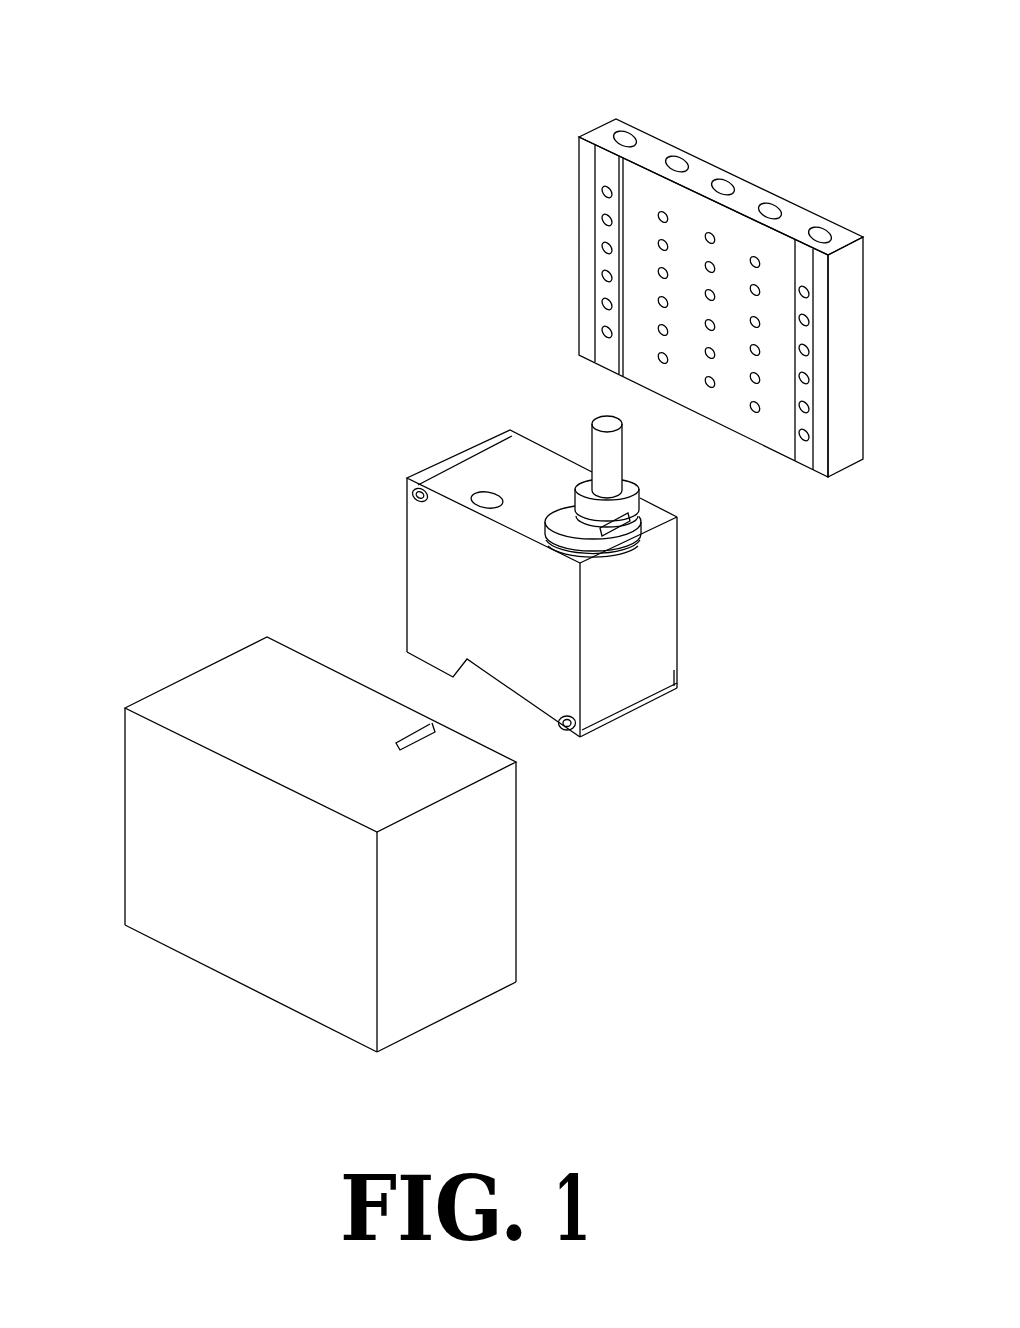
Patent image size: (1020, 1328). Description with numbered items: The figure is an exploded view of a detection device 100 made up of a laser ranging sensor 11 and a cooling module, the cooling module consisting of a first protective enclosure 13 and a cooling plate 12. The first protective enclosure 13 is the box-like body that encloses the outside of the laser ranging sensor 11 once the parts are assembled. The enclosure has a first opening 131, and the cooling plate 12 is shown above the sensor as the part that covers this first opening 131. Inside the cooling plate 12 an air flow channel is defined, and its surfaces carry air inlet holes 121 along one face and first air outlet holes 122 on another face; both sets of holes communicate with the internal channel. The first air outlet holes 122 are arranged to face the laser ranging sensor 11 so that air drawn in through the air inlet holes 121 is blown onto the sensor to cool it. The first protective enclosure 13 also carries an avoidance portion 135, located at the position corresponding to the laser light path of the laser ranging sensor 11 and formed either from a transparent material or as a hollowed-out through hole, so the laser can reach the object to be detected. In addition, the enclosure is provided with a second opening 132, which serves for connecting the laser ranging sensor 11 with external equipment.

The detection device 100 is at (137, 65).
The laser ranging sensor 11 is at (493, 455).
The cooling plate 12 is at (592, 193).
The air inlet holes 121 is at (699, 149).
The first air outlet holes 122 is at (639, 301).
The first protective enclosure 13 is at (247, 703).
The first opening 131 is at (546, 820).
The second opening 132 is at (471, 727).
The avoidance portion 135 is at (259, 1032).